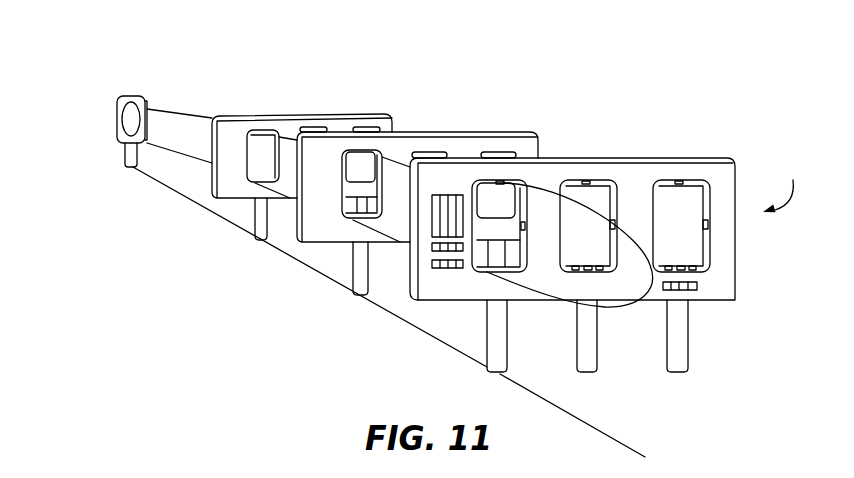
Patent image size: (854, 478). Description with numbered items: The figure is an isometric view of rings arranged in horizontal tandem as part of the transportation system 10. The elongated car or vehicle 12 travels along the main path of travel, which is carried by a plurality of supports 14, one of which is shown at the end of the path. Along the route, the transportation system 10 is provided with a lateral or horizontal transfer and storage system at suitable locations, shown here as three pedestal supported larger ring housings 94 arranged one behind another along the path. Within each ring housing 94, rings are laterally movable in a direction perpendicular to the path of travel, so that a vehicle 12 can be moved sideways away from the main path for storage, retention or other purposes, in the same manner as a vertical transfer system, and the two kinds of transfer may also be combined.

The transportation system 10 is at (300, 60).
The car or vehicle 12 is at (180, 152).
The support 14 is at (118, 108).
The ring housing 94 is at (388, 123).